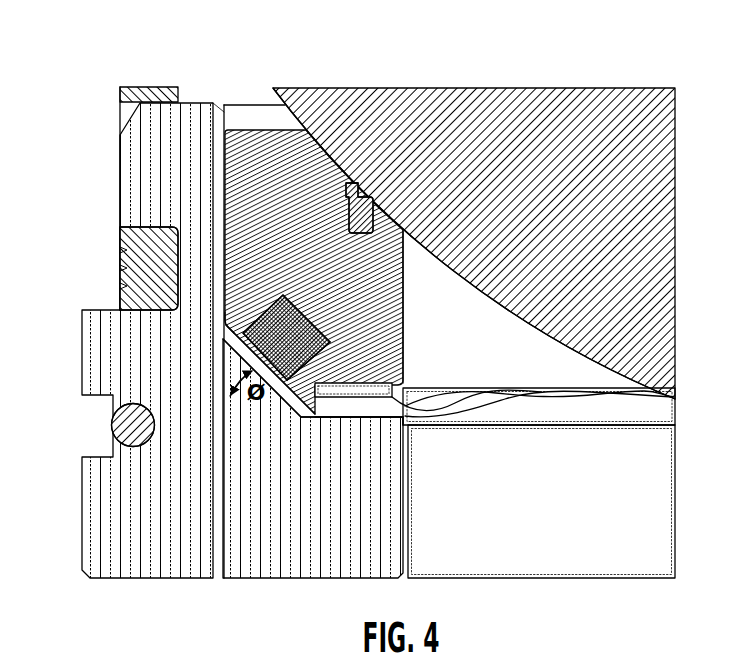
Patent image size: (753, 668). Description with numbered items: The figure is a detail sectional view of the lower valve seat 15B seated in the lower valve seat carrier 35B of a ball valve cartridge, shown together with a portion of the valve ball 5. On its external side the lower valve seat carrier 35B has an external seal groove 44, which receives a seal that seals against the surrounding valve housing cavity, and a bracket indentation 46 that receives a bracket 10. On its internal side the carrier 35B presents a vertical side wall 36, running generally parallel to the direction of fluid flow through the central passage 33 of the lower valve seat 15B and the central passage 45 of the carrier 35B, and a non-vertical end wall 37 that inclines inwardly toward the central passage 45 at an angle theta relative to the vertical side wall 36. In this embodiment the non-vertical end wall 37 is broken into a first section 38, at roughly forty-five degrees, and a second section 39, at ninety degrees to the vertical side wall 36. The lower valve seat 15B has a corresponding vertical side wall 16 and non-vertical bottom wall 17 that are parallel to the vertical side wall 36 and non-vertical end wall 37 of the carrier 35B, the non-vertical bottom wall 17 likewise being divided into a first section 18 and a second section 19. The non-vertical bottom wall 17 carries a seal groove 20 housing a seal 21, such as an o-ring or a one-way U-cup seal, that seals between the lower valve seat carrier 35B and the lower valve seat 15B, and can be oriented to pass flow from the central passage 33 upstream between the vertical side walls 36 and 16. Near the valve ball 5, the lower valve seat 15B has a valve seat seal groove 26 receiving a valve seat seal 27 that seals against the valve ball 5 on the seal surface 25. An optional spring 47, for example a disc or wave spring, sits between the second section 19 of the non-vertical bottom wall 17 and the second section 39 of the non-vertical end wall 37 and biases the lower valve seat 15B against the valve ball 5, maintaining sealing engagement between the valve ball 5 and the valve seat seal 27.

The valve ball 5 is at (619, 256).
The bracket 10 is at (122, 282).
The lower valve seat 15B is at (310, 218).
The vertical side wall 16 is at (223, 167).
The non-vertical bottom wall 17 is at (307, 408).
The first section 18 is at (303, 378).
The second section 19 is at (393, 383).
The seal groove 20 is at (287, 297).
The seal 21 is at (283, 362).
The seal surface 25 is at (332, 127).
The valve seat seal groove 26 is at (373, 222).
The valve seat seal 27 is at (360, 184).
The central passage 33 is at (505, 368).
The lower valve seat carrier 35B is at (148, 367).
The vertical side wall 36 is at (227, 108).
The non-vertical end wall 37 is at (275, 410).
The first section 38 is at (230, 330).
The second section 39 is at (330, 424).
The external seal groove 44 is at (110, 425).
The central passage 45 is at (576, 530).
The bracket indentation 46 is at (140, 227).
The spring 47 is at (540, 412).